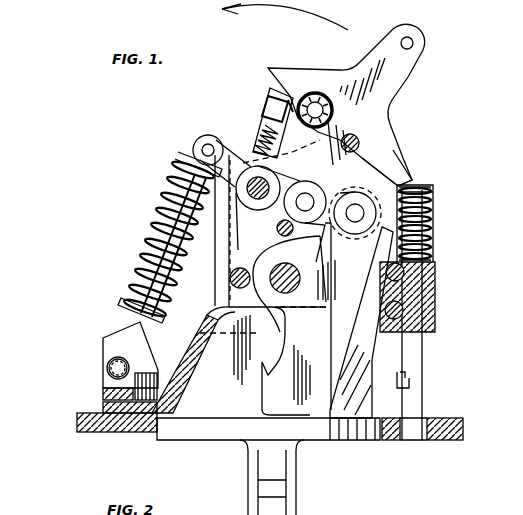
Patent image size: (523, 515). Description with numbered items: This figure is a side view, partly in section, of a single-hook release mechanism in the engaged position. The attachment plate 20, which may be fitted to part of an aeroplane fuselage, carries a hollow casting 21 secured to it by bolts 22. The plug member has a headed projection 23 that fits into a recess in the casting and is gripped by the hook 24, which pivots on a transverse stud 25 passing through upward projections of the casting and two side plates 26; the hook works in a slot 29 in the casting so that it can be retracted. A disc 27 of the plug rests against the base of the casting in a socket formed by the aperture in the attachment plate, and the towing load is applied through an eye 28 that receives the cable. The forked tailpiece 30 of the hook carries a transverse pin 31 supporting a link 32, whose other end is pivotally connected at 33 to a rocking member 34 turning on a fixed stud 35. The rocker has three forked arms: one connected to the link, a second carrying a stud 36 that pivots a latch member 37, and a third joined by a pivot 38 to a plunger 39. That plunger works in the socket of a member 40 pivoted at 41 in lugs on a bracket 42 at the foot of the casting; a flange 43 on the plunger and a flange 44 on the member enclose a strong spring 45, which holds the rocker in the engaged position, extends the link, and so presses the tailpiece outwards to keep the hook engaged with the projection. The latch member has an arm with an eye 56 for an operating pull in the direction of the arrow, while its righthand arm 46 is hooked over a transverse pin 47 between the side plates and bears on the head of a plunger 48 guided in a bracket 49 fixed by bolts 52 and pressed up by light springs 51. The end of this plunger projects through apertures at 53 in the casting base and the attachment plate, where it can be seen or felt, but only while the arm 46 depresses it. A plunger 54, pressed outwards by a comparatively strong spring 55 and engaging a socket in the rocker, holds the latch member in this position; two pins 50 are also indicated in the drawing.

The attachment plate 20 is at (97, 430).
The hollow casting 21 is at (130, 302).
The bolts 22 is at (107, 368).
The headed projection 23 is at (258, 312).
The hook 24 is at (313, 393).
The transverse stud 25 is at (285, 293).
The side plates 26 is at (240, 250).
The disc 27 is at (200, 432).
The eye 28 is at (292, 488).
The slot 29 is at (363, 363).
The tailpiece 30 is at (365, 250).
The transverse pin 31 is at (430, 202).
The link 32 is at (412, 173).
The pivot 33 is at (380, 195).
The rocking member 34 is at (248, 147).
The fixed stud 35 is at (233, 140).
The stud 36 is at (315, 102).
The latch member 37 is at (402, 77).
The pivot 38 is at (197, 146).
The plunger 39 is at (185, 200).
The member 40 is at (233, 270).
The pivot 41 is at (110, 362).
The bracket 42 is at (105, 397).
The flange 43 is at (190, 168).
The flange 44 is at (103, 343).
The strong spring 45 is at (285, 232).
The righthand arm 46 is at (365, 160).
The transverse pin 47 is at (358, 139).
The plunger 48 is at (413, 360).
The bracket 49 is at (433, 307).
The pin 50 is at (245, 240).
The light springs 51 is at (432, 237).
The bolts 52 is at (403, 307).
The apertures 53 is at (422, 438).
The plunger 54 is at (277, 100).
The spring 55 is at (260, 116).
The eye 56 is at (413, 43).